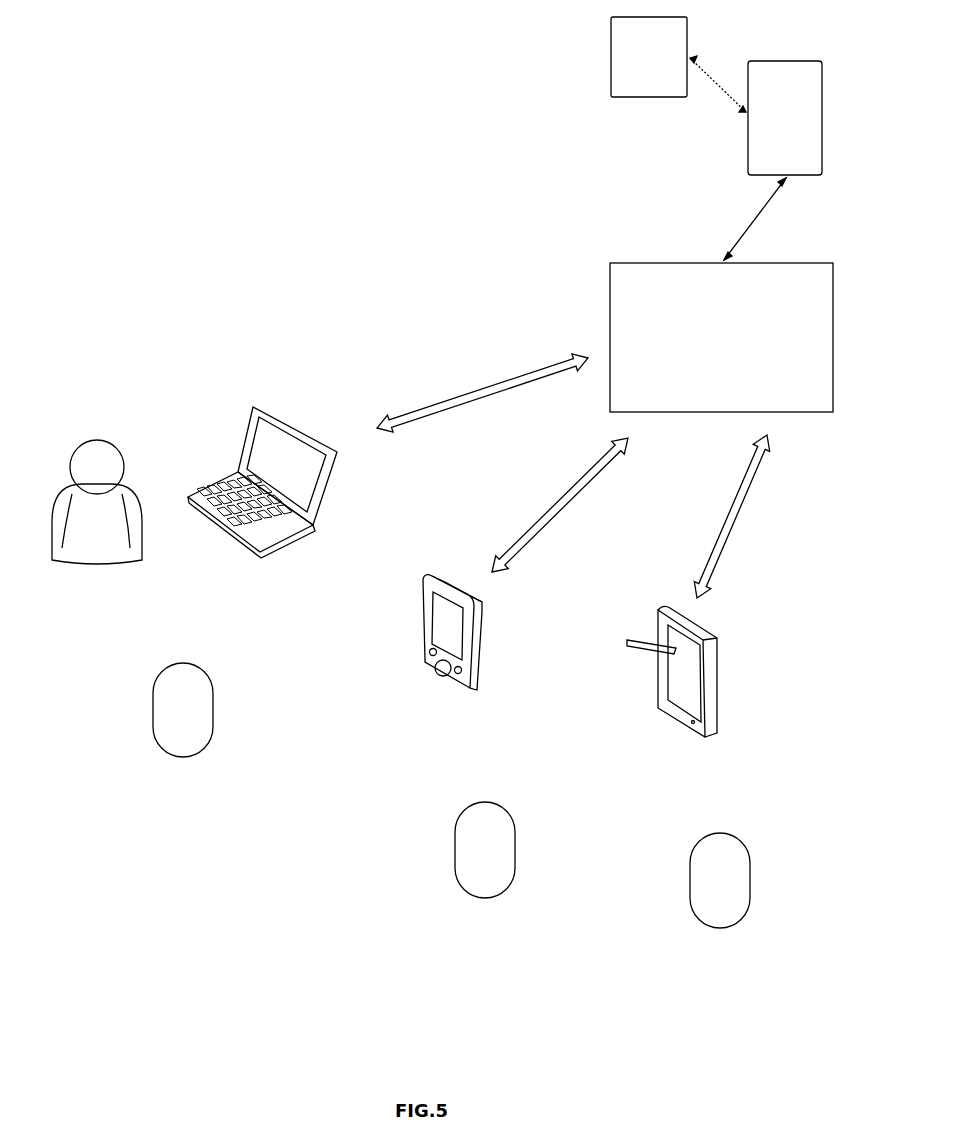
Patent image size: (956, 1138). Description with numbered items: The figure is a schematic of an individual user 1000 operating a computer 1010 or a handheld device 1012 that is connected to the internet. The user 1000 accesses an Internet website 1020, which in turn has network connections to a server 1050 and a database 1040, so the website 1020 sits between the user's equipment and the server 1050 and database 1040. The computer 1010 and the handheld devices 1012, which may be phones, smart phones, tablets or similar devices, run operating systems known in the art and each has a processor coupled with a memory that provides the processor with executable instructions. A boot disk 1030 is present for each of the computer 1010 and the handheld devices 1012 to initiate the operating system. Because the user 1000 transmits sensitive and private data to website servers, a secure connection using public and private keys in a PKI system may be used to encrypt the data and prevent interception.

The user 1000 is at (89, 477).
The computer 1010 is at (262, 464).
The Internet website 1020 is at (721, 337).
The boot disk 1030 is at (230, 540).
The database 1040 is at (649, 57).
The server 1050 is at (785, 118).
The handheld device 1012 is at (524, 662).